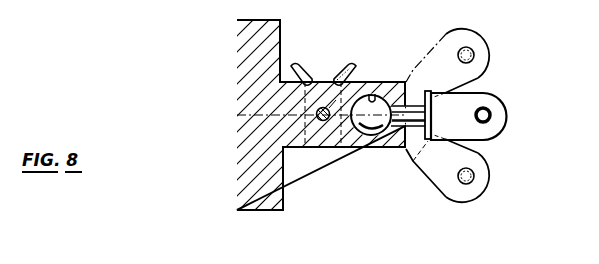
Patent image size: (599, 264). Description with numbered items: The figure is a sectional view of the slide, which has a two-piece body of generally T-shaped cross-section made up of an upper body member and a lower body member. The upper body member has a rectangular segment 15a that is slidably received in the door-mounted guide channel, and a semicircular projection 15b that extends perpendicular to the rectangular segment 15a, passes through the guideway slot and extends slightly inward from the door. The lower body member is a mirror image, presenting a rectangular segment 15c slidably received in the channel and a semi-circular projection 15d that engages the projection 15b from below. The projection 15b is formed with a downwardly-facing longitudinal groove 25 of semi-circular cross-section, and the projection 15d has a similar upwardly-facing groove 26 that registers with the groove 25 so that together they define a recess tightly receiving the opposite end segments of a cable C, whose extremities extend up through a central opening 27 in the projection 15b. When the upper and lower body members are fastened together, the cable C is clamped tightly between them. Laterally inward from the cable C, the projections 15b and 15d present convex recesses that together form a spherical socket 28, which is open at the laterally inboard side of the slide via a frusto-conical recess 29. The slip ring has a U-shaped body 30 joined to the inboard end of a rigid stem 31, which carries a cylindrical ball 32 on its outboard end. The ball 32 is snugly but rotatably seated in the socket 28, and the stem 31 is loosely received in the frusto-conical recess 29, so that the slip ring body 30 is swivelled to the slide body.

The rectangular segment 15a is at (247, 55).
The semicircular projection 15b is at (289, 82).
The rectangular segment 15c is at (252, 144).
The semi-circular projection 15d is at (291, 149).
The longitudinal groove 25 is at (322, 121).
The upwardly-facing groove 26 is at (327, 124).
The central opening 27 is at (334, 128).
The spherical socket 28 is at (372, 94).
The frusto-conical recess 29 is at (409, 96).
The U-shaped body 30 is at (487, 103).
The rigid stem 31 is at (422, 93).
The ball 32 is at (351, 82).
The cable C is at (322, 107).